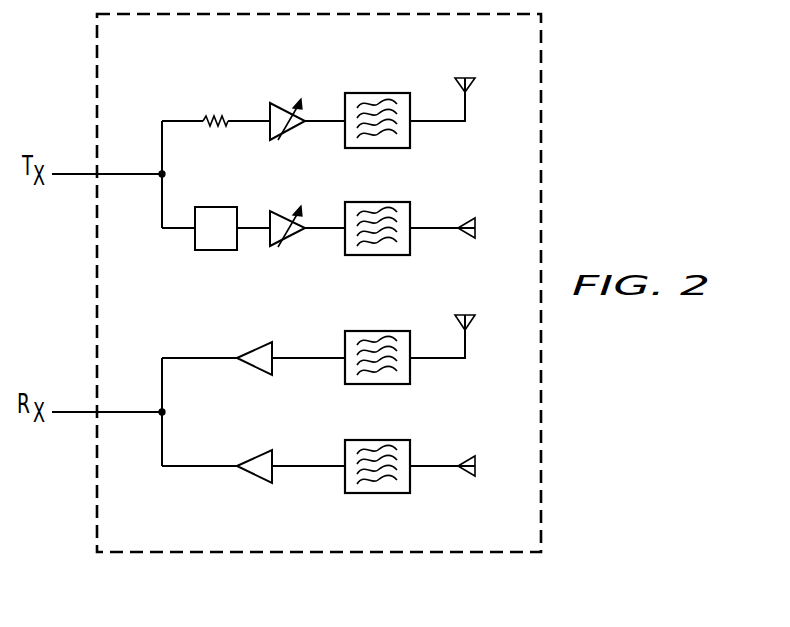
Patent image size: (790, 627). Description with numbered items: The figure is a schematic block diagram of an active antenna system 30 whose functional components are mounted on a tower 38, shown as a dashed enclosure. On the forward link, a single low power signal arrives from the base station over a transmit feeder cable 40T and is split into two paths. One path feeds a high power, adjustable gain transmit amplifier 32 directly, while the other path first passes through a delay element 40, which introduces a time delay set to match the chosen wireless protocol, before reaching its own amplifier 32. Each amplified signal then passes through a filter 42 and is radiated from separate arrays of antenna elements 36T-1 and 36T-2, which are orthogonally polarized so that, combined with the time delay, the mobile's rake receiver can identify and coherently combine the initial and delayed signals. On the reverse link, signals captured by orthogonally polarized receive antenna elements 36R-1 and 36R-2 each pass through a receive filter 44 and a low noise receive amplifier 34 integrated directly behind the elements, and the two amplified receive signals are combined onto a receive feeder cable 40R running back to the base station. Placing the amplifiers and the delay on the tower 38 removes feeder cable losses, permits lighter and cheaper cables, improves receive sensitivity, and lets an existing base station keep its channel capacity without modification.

The active antenna system 30 is at (609, 187).
The tower 38 is at (97, 282).
The transmit feeder cable 40T is at (136, 172).
The receive feeder cable 40R is at (136, 416).
The delay element 40 is at (208, 207).
The transmit gain-adjustable amplifier 32 is at (283, 103).
The filter 42 is at (378, 93).
The receive filter 44 is at (378, 384).
The low noise receive amplifier 34 is at (256, 376).
The first transmit antenna element array 36T-1 is at (469, 78).
The second transmit antenna element array 36T-2 is at (469, 218).
The first receive antenna element 36R-1 is at (482, 292).
The second receive antenna element 36R-2 is at (469, 456).